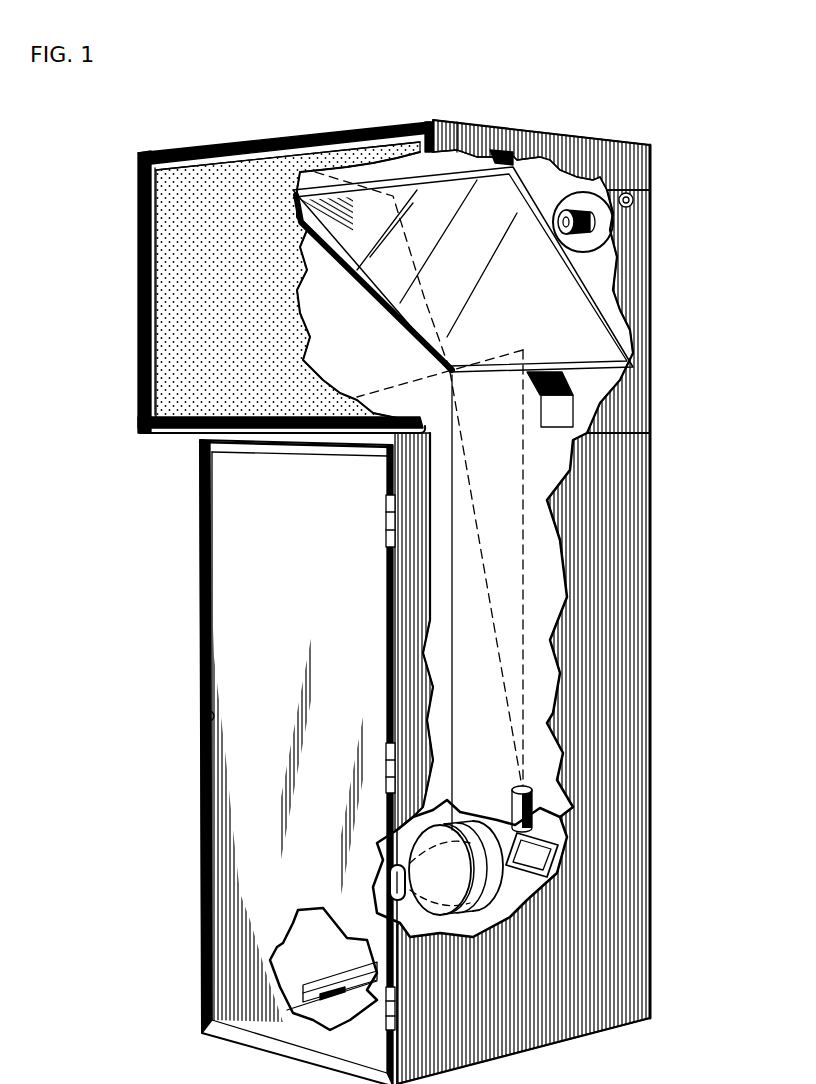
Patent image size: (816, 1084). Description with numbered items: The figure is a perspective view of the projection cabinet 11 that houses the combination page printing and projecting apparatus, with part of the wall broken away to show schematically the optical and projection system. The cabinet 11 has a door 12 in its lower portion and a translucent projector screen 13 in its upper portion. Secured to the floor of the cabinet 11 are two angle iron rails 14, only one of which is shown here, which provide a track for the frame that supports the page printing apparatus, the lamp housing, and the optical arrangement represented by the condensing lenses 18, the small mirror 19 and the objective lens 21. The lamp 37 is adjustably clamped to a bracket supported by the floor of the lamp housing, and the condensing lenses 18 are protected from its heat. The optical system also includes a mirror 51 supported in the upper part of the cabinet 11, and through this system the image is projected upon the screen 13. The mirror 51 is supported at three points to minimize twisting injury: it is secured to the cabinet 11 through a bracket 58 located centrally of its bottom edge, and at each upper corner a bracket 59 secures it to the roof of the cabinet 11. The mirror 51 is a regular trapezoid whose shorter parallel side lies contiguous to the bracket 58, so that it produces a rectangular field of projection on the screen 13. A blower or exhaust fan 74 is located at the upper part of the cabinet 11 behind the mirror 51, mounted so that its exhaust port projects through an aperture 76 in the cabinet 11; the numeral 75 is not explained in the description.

The cabinet 11 is at (537, 586).
The door 12 is at (272, 762).
The translucent projector screen 13 is at (259, 277).
The angle iron rails 14 is at (352, 978).
The condensing lenses 18 is at (489, 893).
The small mirror 19 is at (520, 840).
The objective lens 21 is at (511, 797).
The lamp 37 is at (398, 865).
The mirror 51 is at (580, 326).
The bracket 58 is at (564, 381).
The bracket 59 is at (493, 128).
The blower 74 is at (600, 234).
The door frame 75 is at (146, 384).
The aperture 76 is at (634, 199).